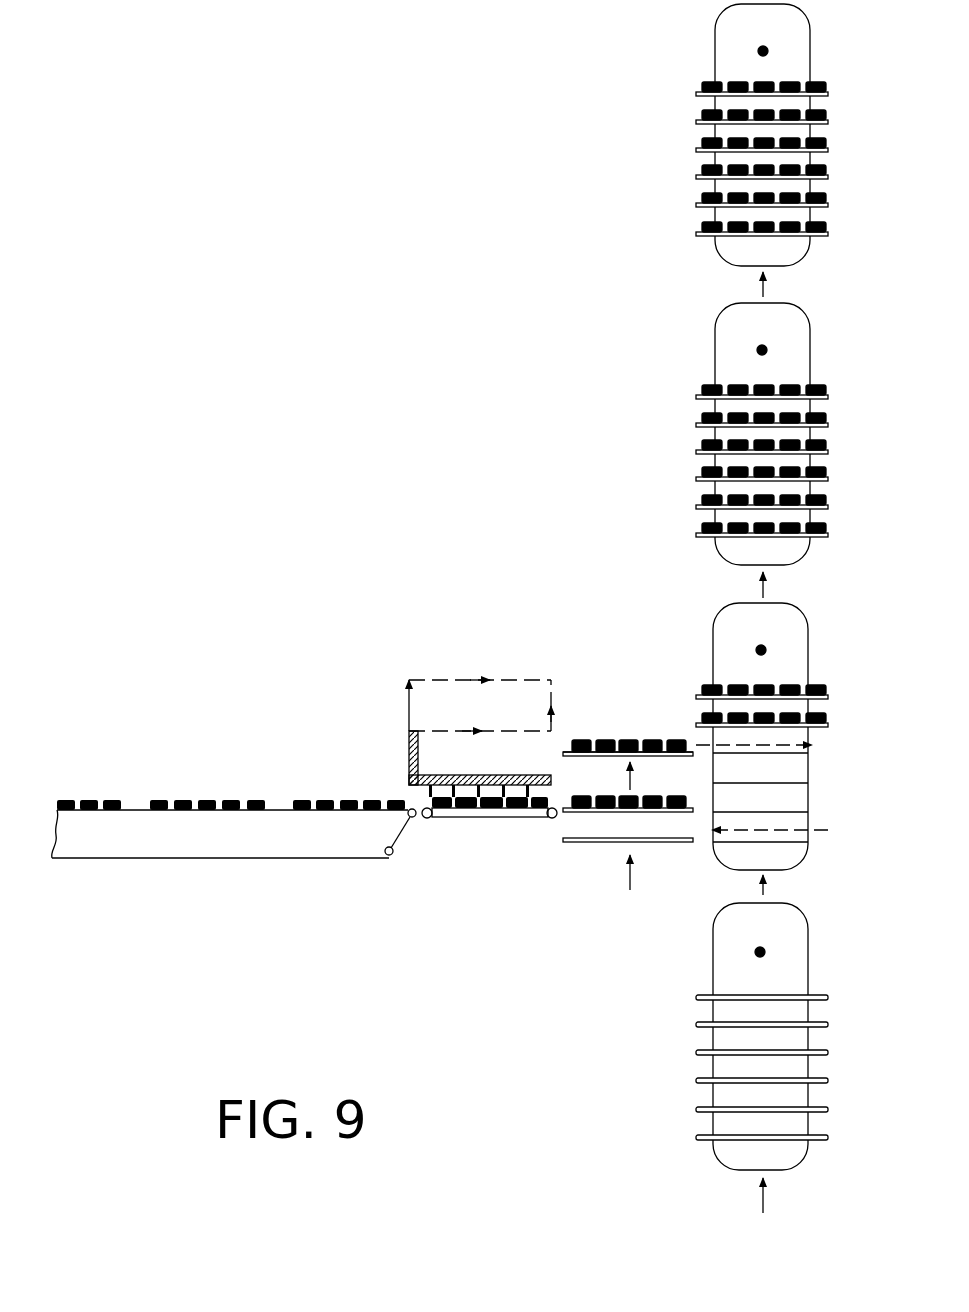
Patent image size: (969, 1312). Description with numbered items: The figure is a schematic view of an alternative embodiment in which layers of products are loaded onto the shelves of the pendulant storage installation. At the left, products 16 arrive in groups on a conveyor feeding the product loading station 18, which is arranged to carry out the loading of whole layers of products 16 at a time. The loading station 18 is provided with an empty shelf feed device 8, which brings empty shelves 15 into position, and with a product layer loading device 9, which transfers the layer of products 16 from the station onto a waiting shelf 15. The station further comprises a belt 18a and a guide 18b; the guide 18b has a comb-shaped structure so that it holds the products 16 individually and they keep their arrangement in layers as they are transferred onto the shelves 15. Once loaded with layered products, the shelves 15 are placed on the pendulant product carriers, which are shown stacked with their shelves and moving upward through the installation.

The empty shelf feed device 8 is at (598, 724).
The product layer loading device 9 is at (469, 674).
The shelf 15 is at (585, 757).
The product 16 is at (200, 788).
The product loading station 18 is at (488, 883).
The belt 18a is at (530, 817).
The guide 18b is at (442, 818).